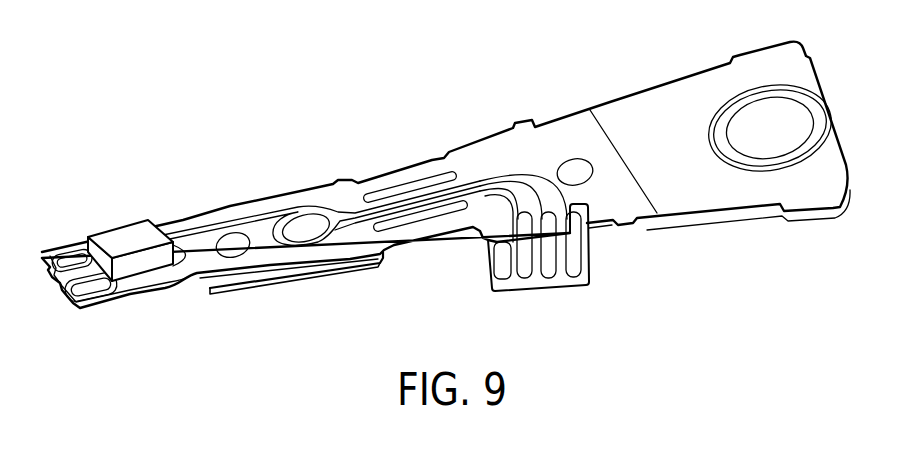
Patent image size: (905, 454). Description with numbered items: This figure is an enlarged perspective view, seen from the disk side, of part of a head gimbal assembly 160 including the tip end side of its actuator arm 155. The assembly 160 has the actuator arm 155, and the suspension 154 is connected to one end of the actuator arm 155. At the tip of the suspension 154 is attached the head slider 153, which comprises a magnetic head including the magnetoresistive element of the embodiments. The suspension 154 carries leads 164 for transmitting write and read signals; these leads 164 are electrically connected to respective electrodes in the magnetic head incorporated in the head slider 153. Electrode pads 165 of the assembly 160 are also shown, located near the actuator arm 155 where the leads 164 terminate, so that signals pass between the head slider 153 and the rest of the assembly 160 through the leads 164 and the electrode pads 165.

The assembly 160 is at (441, 108).
The head slider 153 is at (113, 226).
The suspension 154 is at (340, 192).
The actuator arm 155 is at (713, 190).
The leads 164 is at (249, 263).
The electrode pads 165 is at (552, 274).